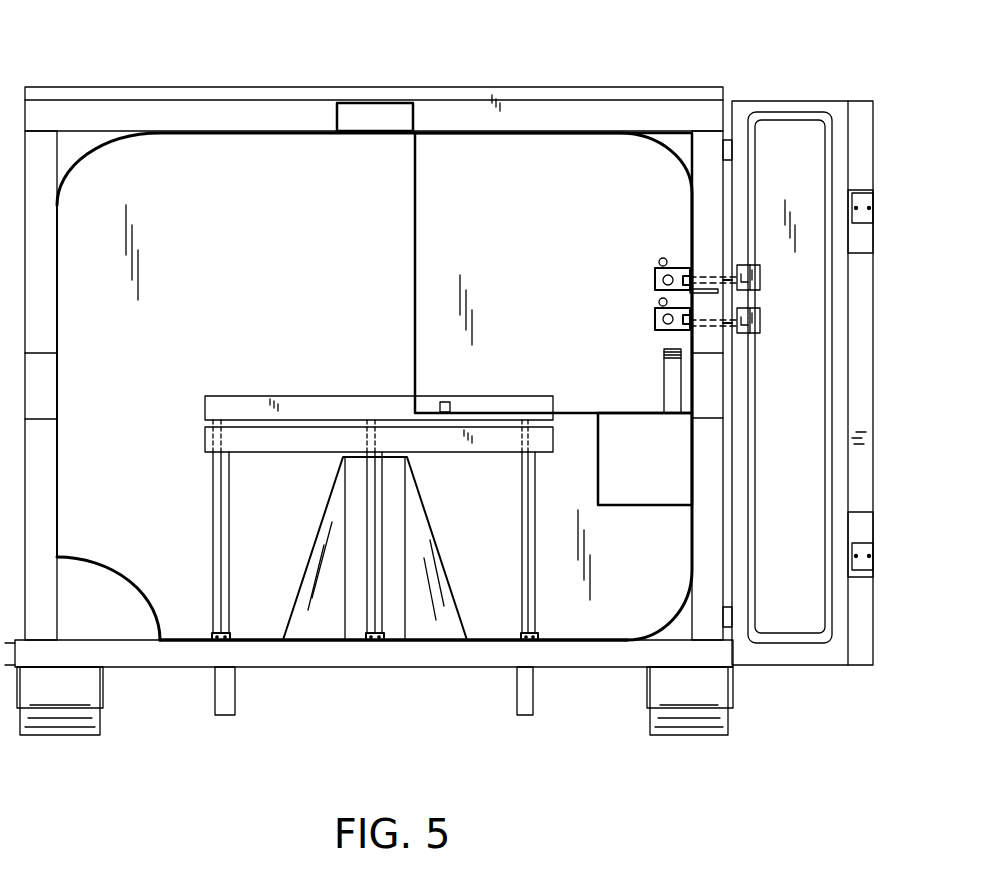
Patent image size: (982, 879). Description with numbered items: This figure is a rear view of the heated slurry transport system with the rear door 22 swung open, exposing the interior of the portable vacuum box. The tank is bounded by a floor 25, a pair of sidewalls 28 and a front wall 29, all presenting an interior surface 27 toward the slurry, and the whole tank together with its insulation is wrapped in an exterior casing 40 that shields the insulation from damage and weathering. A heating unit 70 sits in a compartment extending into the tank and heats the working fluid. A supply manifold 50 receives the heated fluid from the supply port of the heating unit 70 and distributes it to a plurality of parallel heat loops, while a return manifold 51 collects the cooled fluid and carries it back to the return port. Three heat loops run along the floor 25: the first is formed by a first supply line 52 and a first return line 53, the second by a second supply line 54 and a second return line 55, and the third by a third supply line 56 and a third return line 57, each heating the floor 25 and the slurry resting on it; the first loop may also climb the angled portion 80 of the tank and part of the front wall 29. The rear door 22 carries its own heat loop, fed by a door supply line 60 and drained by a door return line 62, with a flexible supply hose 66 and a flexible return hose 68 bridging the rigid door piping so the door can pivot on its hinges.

The rear door 22 is at (873, 385).
The floor 25 is at (260, 635).
The interior surface 27 is at (175, 640).
The sidewalls 28 is at (60, 468).
The front wall 29 is at (222, 363).
The exterior casing 40 is at (223, 87).
The supply manifold 50 is at (306, 396).
The return manifold 51 is at (272, 445).
The first supply line 52 is at (218, 600).
The first return line 53 is at (228, 622).
The second supply line 54 is at (368, 605).
The second return line 55 is at (378, 620).
The third supply line 56 is at (523, 605).
The third return line 57 is at (533, 622).
The door supply line 60 is at (668, 330).
The door return line 62 is at (665, 262).
The flexible supply hose 66 is at (712, 327).
The flexible return hose 68 is at (708, 275).
The heating unit 70 is at (502, 257).
The angled portion 80 is at (398, 560).